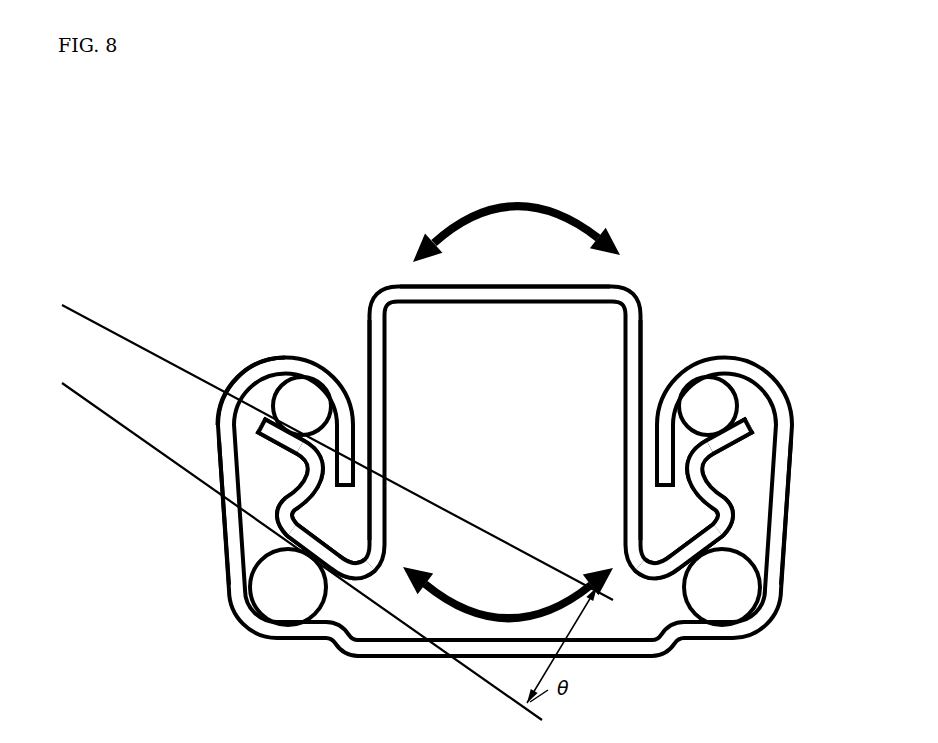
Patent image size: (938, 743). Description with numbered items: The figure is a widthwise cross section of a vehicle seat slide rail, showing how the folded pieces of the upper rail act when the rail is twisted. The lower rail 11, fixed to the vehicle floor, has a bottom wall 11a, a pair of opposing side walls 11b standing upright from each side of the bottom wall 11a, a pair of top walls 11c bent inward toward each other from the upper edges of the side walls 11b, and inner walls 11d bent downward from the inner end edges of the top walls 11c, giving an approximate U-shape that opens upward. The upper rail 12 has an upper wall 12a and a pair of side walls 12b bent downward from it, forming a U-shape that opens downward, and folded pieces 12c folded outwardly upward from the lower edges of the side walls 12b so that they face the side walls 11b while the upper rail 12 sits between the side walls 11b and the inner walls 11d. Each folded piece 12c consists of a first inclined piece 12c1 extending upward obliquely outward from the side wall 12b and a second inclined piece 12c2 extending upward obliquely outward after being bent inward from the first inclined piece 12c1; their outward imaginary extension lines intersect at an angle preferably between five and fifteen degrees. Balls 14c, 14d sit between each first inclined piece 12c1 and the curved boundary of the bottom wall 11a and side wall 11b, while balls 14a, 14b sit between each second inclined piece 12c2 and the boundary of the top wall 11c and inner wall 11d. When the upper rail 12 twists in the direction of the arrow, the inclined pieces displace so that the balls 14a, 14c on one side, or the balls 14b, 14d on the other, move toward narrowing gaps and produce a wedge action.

The lower rail 11 is at (661, 662).
The bottom wall 11a is at (617, 650).
The side wall 11b is at (226, 532).
The top wall 11c is at (247, 372).
The inner wall 11d is at (343, 412).
The upper rail 12 is at (633, 300).
The upper wall 12a is at (505, 297).
The side wall 12b is at (387, 460).
The folded piece 12c is at (283, 500).
The first inclined piece 12c1 is at (318, 553).
The second inclined piece 12c2 is at (256, 428).
The ball 14a is at (293, 390).
The ball 14b is at (703, 398).
The ball 14c is at (283, 592).
The ball 14d is at (722, 600).